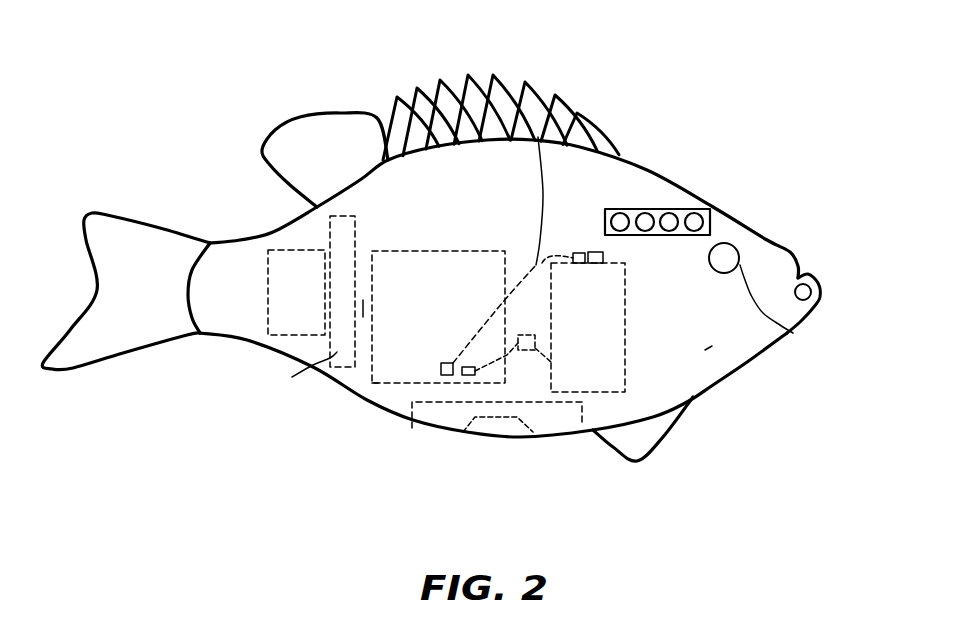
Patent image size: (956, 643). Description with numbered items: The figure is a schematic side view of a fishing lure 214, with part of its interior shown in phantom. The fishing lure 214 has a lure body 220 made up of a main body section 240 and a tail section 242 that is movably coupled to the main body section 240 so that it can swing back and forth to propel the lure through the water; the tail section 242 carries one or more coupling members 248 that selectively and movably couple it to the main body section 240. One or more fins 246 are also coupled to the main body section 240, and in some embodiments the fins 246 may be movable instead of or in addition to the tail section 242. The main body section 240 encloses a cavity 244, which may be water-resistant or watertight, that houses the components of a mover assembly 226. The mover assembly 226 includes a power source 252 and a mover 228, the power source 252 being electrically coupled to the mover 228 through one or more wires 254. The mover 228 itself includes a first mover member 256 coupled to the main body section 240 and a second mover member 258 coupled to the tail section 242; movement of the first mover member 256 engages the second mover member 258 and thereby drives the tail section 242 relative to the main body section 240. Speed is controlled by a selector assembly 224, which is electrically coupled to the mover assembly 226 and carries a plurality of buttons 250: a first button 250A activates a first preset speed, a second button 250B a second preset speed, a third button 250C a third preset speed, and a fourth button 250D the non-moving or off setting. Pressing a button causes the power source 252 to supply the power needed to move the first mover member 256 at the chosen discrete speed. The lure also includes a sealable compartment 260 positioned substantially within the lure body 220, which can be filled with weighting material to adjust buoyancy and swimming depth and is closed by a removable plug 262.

The fishing lure 214 is at (196, 90).
The lure body 220 is at (712, 389).
The selector assembly 224 is at (713, 226).
The mover assembly 226 is at (442, 93).
The mover 228 is at (373, 384).
The main body section 240 is at (708, 347).
The tail section 242 is at (107, 333).
The cavity 244 is at (580, 170).
The fins 246 is at (323, 140).
The coupling members 248 is at (335, 237).
The buttons 250 is at (686, 234).
The first button 250A is at (620, 213).
The second button 250B is at (645, 213).
The third button 250C is at (669, 213).
The fourth button 250D is at (694, 213).
The power source 252 is at (600, 377).
The wires 254 is at (483, 248).
The first mover member 256 is at (363, 317).
The second mover member 258 is at (350, 267).
The sealable compartment 260 is at (553, 417).
The removable plug 262 is at (510, 428).